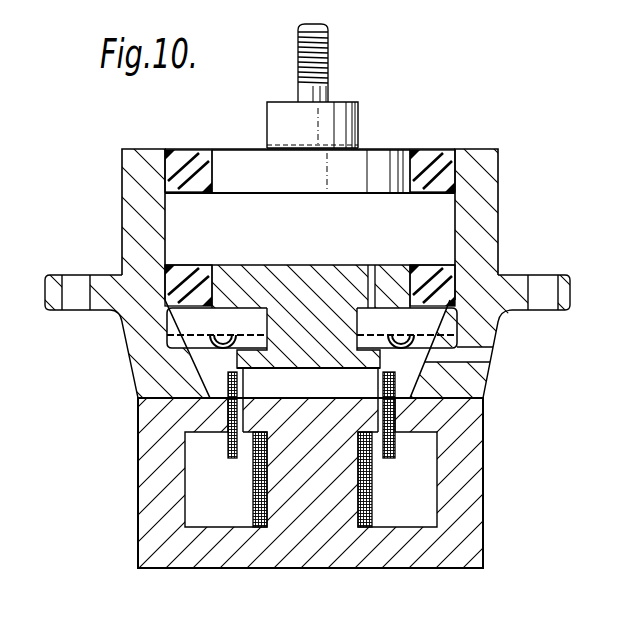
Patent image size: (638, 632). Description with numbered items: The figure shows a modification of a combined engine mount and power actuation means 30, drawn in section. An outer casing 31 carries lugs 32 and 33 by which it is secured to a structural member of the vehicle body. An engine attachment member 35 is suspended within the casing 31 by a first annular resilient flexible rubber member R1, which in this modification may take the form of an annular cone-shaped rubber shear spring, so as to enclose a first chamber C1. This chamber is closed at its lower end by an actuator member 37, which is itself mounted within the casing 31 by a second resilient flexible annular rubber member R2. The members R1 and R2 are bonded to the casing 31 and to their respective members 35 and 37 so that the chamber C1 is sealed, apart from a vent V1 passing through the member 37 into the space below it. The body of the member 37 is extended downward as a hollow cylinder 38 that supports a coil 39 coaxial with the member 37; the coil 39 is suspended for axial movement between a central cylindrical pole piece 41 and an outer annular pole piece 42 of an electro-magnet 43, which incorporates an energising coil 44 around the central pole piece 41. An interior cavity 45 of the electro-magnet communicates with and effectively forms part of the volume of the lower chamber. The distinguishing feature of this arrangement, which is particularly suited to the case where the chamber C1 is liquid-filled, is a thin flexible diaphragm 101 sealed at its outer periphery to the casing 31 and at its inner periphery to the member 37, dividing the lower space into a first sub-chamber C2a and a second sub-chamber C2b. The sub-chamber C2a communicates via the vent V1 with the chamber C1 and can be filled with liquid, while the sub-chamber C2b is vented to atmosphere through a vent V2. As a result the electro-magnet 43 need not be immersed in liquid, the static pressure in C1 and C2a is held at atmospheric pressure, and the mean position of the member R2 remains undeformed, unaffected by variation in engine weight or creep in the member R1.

The combined engine mount and power actuation means 30 is at (502, 157).
The outer casing 31 is at (487, 200).
The lug 32 is at (50, 277).
The lug 33 is at (572, 277).
The engine attachment member 35 is at (342, 112).
The actuator member 37 is at (243, 267).
The first annular resilient flexible rubber member R1 is at (434, 160).
The second resilient flexible annular rubber member R2 is at (436, 267).
The first chamber C1 is at (324, 239).
The vent V1 is at (370, 264).
The first sub-chamber C2a is at (187, 322).
The second sub-chamber C2b is at (213, 360).
The thin flexible diaphragm 101 is at (427, 322).
The vent V2 is at (483, 354).
The hollow cylinder 38 is at (383, 455).
The coil 39 is at (398, 448).
The central cylindrical pole piece 41 is at (332, 496).
The outer annular pole piece 42 is at (227, 420).
The electro-magnet 43 is at (283, 541).
The energising coil 44 is at (374, 512).
The interior cavity 45 is at (198, 495).